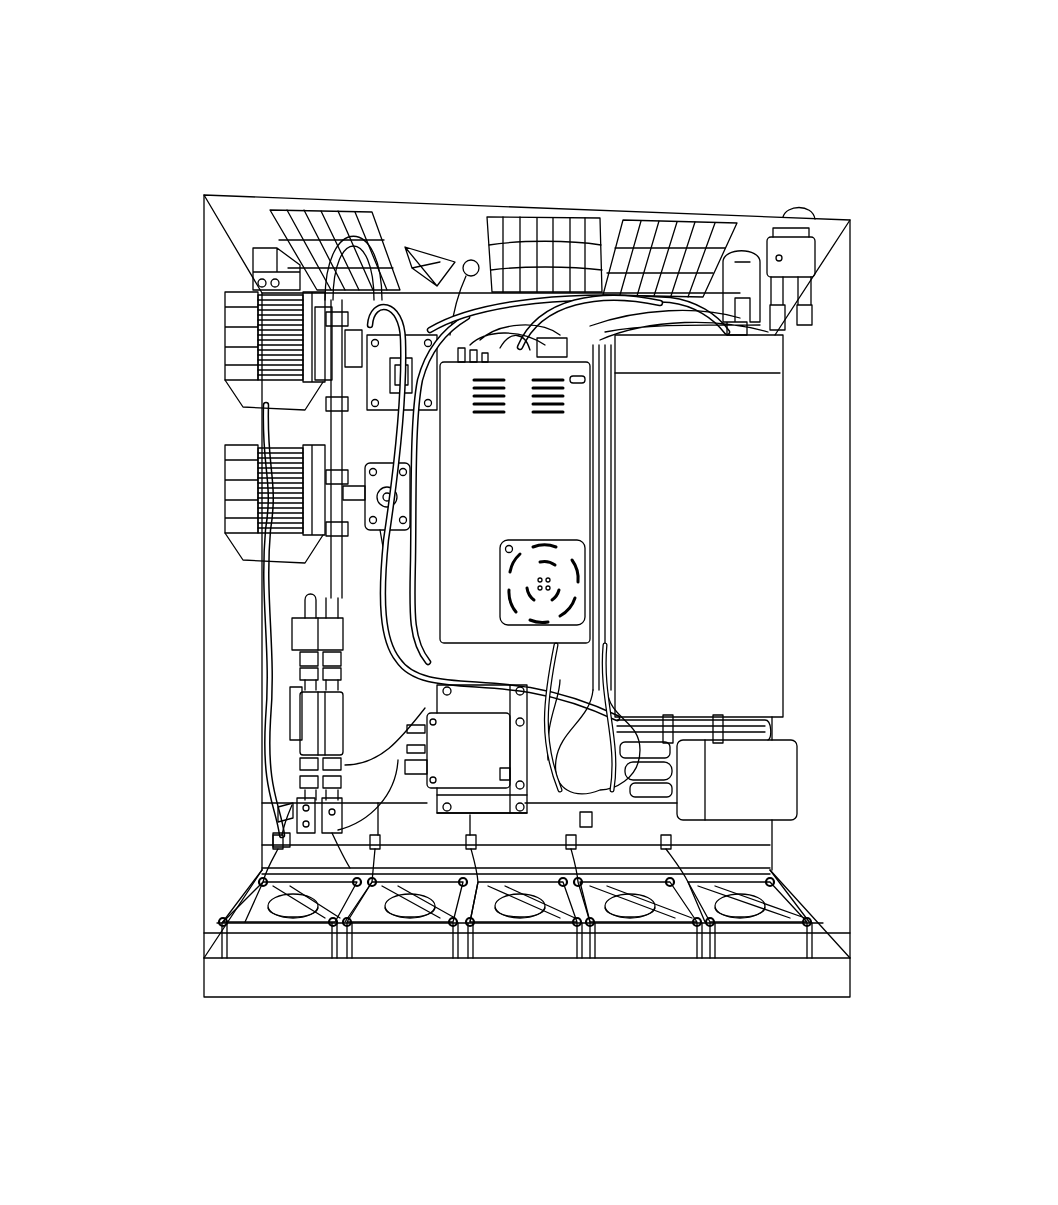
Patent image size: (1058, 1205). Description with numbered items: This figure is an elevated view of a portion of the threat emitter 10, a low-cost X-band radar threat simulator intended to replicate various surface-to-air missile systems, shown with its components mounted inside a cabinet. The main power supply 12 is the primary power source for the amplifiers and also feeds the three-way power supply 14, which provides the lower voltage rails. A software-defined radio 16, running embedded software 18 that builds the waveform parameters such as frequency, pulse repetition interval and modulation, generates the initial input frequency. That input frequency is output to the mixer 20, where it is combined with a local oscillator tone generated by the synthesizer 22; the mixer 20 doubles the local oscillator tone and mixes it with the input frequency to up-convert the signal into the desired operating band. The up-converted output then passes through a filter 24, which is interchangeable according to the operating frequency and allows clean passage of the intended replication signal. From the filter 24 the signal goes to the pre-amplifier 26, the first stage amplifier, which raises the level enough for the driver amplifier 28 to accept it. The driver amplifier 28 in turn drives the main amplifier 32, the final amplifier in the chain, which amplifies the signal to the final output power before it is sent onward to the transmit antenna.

The threat emitter 10 is at (495, 105).
The main power supply 12 is at (735, 438).
The three-way power supply 14 is at (560, 485).
The software-defined radio 16 is at (498, 803).
The software 18 is at (743, 772).
The mixer 20 is at (290, 815).
The synthesizer 22 is at (463, 757).
The filter 24 is at (310, 718).
The pre-amplifier 26 is at (298, 630).
The driver amplifier 28 is at (245, 488).
The main amplifier 32 is at (245, 336).